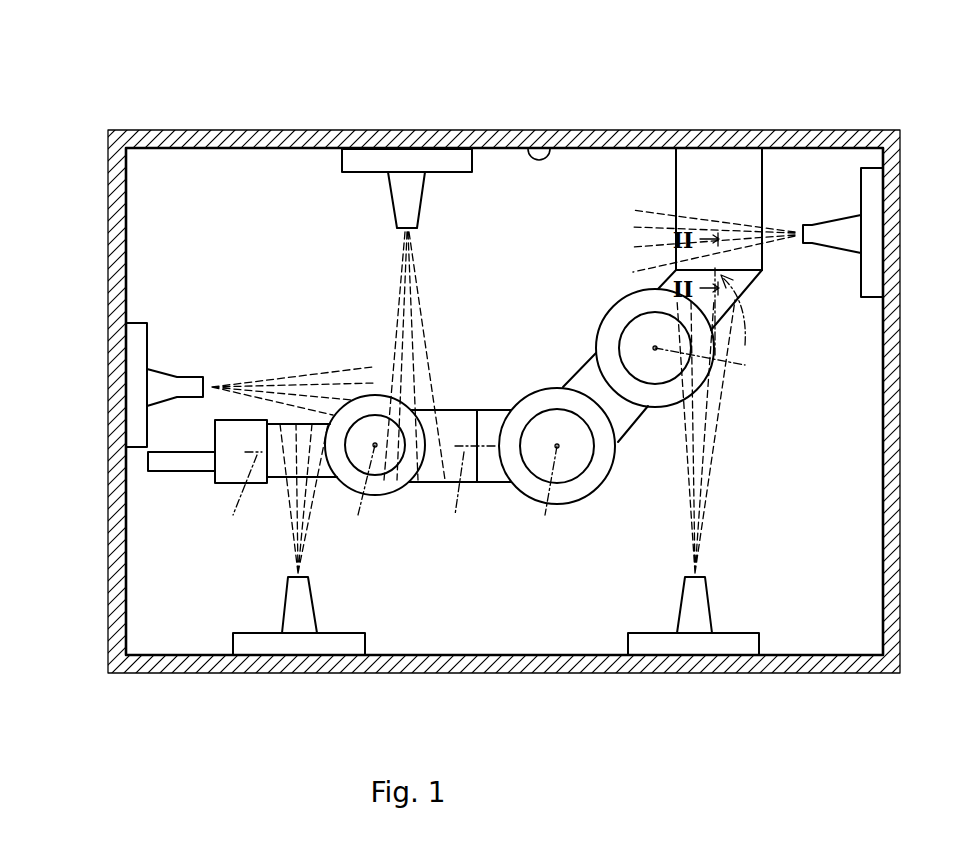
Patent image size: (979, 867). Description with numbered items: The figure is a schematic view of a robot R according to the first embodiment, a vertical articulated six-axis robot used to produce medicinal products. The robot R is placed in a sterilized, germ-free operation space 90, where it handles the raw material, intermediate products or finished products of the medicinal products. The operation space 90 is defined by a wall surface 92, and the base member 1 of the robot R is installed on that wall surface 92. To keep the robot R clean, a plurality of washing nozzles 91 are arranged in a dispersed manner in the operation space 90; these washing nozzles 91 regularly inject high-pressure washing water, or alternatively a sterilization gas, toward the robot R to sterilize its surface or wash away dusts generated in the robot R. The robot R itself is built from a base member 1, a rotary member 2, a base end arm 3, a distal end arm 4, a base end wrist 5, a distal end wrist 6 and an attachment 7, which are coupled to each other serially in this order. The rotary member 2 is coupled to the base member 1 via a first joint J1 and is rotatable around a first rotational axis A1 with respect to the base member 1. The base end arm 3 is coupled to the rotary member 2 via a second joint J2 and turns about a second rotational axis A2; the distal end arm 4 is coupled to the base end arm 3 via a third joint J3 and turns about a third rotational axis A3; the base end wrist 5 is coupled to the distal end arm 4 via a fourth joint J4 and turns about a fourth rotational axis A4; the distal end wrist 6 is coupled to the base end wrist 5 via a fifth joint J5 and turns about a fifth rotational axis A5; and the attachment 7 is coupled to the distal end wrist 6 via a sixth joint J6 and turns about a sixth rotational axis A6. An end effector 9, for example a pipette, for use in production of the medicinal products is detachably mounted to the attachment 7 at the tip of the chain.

The robot R is at (790, 183).
The base member 1 is at (692, 175).
The rotary member 2 is at (670, 273).
The base end arm 3 is at (590, 365).
The distal end arm 4 is at (493, 410).
The base end wrist 5 is at (465, 410).
The distal end wrist 6 is at (310, 423).
The attachment 7 is at (248, 421).
The end effector 9 is at (191, 450).
The operation space 90 is at (183, 610).
The washing nozzles 91 is at (412, 165).
The wall surface 92 is at (540, 150).
The first joint J1 is at (767, 272).
The second joint J2 is at (700, 392).
The third joint J3 is at (578, 502).
The fourth joint J4 is at (478, 487).
The fifth joint J5 is at (396, 494).
The sixth joint J6 is at (268, 487).
The first rotational axis A1 is at (746, 311).
The second rotational axis A2 is at (717, 369).
The third rotational axis A3 is at (542, 498).
The fourth rotational axis A4 is at (467, 498).
The fifth rotational axis A5 is at (356, 497).
The sixth rotational axis A6 is at (237, 501).